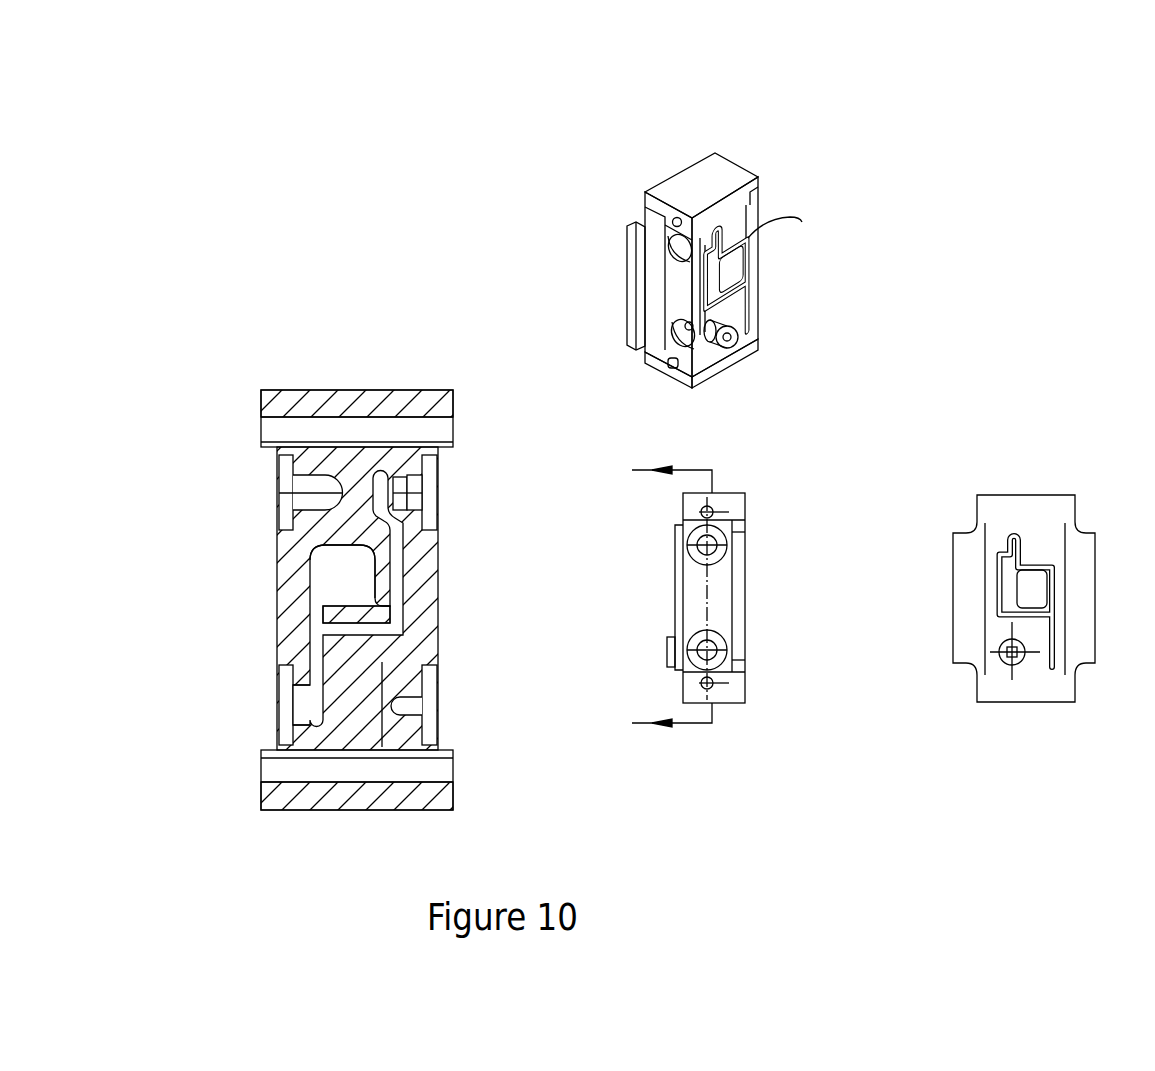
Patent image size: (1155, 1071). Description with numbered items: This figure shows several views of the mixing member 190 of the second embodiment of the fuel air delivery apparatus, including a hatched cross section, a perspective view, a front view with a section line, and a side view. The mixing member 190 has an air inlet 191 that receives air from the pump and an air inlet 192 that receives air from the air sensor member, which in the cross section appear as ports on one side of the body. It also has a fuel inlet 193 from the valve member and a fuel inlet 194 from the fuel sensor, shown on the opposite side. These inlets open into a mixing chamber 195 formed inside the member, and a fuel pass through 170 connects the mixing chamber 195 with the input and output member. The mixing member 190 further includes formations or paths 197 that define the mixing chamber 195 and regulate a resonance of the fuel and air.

The mixing member 190 is at (292, 338).
The air inlet 191 is at (279, 493).
The air inlet 192 is at (279, 705).
The fuel inlet 193 is at (340, 705).
The fuel inlet 194 is at (429, 493).
The mixing chamber 195 is at (365, 574).
The formations or paths 197 is at (812, 219).
The fuel pass through 170 is at (1000, 653).